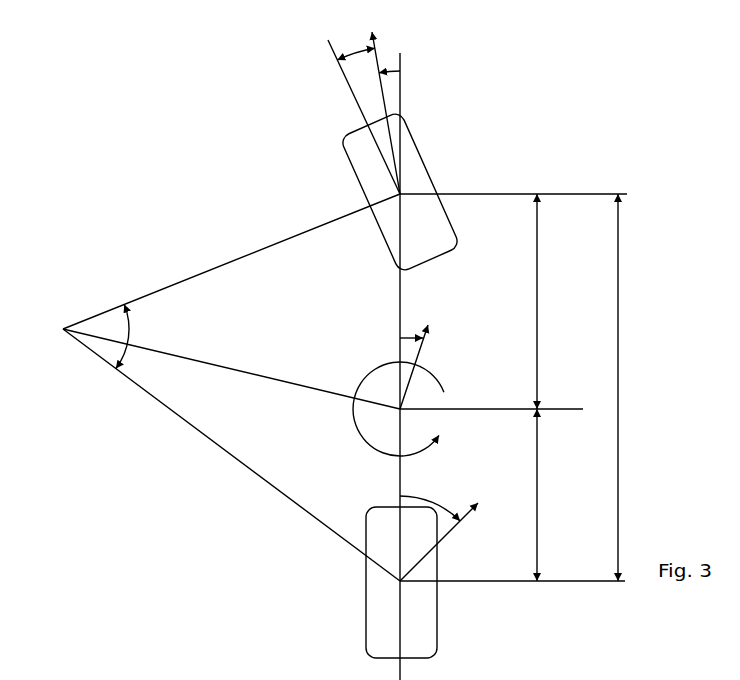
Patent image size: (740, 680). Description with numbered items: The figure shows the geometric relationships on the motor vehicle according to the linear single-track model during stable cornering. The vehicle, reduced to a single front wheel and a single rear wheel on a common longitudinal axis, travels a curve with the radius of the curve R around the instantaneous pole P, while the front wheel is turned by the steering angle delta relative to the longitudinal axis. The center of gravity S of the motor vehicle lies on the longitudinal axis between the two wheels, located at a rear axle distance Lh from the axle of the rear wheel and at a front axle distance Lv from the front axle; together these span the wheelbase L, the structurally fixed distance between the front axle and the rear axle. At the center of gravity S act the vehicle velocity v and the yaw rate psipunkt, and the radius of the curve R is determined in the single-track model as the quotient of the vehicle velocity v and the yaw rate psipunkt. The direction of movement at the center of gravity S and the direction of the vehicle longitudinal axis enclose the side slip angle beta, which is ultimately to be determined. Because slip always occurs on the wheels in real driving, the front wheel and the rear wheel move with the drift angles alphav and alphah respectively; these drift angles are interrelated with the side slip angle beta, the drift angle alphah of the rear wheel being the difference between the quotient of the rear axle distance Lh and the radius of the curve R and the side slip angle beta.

The instantaneous pole P is at (220, 387).
The radius of the curve R is at (231, 369).
The center of gravity S is at (583, 409).
The wheelbase L is at (627, 387).
The front axle distance Lv is at (553, 301).
The rear axle distance Lh is at (557, 495).
The vehicle velocity v is at (423, 367).
The side slip angle beta is at (389, 339).
The yaw rate psipunkt is at (363, 409).
The steering angle delta is at (413, 113).
The drift angle of the front wheel alphav is at (331, 117).
The drift angle of the rear wheel alphah is at (441, 528).